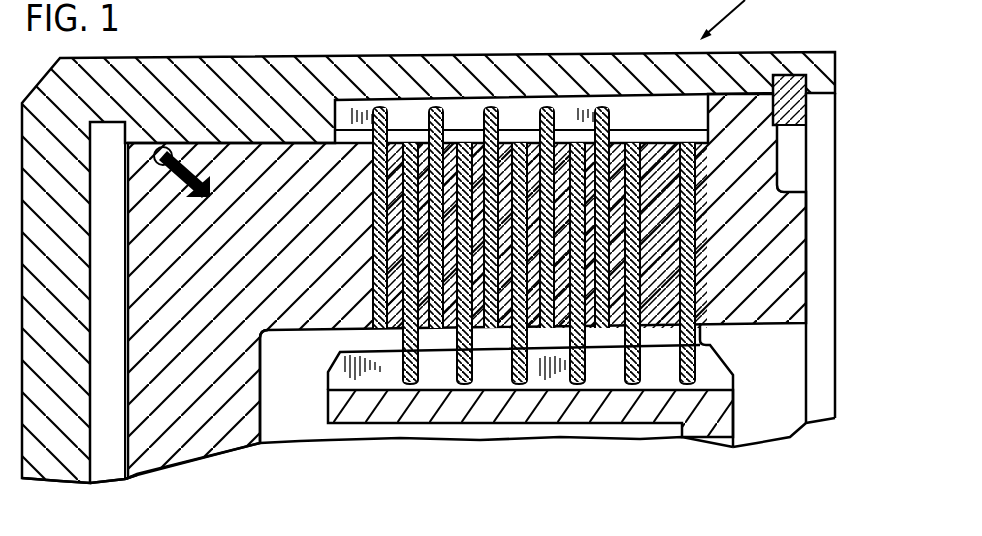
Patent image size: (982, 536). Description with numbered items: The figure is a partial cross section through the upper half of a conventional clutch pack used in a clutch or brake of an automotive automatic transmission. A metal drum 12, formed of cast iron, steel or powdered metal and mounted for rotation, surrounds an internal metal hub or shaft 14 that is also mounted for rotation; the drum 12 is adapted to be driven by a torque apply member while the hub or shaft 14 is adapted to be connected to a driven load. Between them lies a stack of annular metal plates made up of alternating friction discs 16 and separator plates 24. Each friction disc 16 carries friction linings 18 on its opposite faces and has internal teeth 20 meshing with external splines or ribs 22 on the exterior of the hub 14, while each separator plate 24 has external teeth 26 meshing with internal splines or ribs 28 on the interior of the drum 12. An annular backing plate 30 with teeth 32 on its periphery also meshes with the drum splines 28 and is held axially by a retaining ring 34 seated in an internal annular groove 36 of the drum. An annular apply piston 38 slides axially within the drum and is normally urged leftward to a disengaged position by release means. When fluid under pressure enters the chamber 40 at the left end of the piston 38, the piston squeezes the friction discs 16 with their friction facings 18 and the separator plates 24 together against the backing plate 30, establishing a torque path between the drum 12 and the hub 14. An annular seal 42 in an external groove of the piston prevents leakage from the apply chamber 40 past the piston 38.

The metal drum 12 is at (290, 77).
The hub or shaft 14 is at (612, 405).
The friction discs 16 is at (372, 246).
The friction linings 18 is at (407, 112).
The internal teeth 20 is at (471, 423).
The external splines or ribs 22 is at (323, 418).
The separator plates 24 is at (575, 117).
The external teeth 26 is at (378, 107).
The internal splines or ribs 28 is at (333, 148).
The backing plate 30 is at (766, 300).
The teeth 32 is at (735, 90).
The retaining ring 34 is at (814, 50).
The internal annular groove 36 is at (757, 126).
The apply piston 38 is at (198, 420).
The chamber 40 is at (113, 440).
The annular seal 42 is at (192, 143).